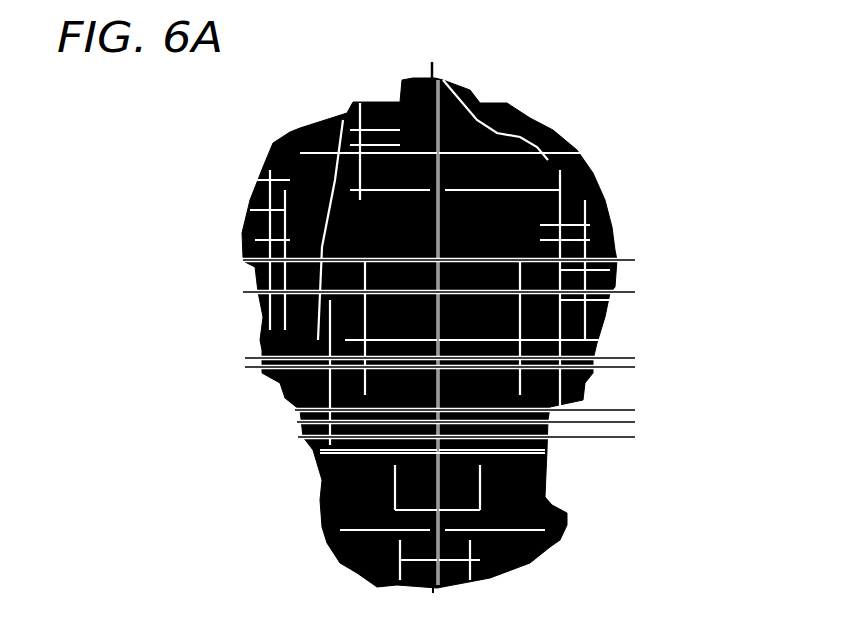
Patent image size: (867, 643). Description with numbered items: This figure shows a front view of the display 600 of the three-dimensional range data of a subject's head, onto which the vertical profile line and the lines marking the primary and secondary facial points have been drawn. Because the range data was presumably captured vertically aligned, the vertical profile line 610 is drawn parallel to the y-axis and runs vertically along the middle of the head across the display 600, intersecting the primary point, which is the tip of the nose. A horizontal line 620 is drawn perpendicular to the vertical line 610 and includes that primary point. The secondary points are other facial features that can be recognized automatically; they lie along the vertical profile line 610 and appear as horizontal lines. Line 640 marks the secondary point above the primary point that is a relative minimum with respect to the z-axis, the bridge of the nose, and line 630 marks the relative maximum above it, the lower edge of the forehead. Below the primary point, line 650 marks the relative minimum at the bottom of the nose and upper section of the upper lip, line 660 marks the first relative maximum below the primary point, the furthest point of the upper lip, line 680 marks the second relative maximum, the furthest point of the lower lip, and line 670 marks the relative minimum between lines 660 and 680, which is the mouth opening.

The display 600 is at (217, 184).
The vertical profile line 610 is at (438, 75).
The horizontal line 620 is at (638, 377).
The line 630 is at (637, 275).
The line 640 is at (638, 308).
The line 650 is at (638, 387).
The line 660 is at (638, 427).
The line 670 is at (637, 437).
The line 680 is at (637, 453).